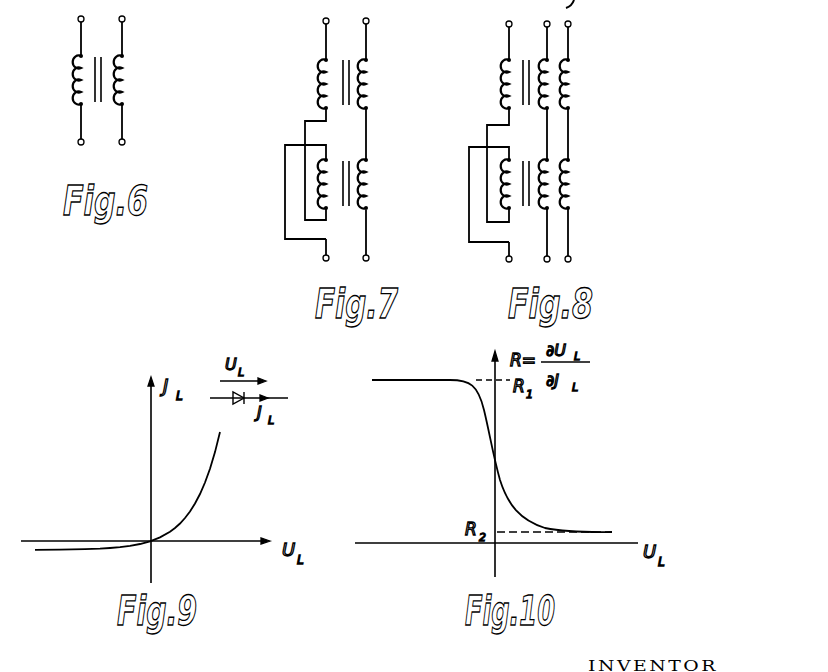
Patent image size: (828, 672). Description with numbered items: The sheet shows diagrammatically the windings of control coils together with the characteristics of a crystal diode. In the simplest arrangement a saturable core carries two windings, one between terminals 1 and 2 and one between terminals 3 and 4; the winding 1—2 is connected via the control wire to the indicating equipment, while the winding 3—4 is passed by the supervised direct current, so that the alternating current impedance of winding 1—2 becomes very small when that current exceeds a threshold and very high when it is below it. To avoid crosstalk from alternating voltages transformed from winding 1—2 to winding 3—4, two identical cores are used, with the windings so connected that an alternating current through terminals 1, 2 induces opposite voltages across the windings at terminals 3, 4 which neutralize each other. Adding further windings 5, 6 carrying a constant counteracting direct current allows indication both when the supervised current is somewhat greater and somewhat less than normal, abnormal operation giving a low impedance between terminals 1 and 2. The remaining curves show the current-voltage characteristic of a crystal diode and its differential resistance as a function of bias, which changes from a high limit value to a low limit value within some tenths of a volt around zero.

In FIG. 6, the winding terminal 1 is at (73, 34).
In FIG. 7, the winding terminal 1 is at (319, 37).
In FIG. 8, the winding terminal 1 is at (501, 38).
In FIG. 6, the winding terminal 2 is at (73, 129).
In FIG. 7, the winding terminal 2 is at (319, 254).
In FIG. 8, the winding terminal 2 is at (501, 256).
In FIG. 6, the winding terminal 3 is at (114, 34).
In FIG. 7, the winding terminal 3 is at (359, 37).
In FIG. 8, the winding terminal 3 is at (540, 38).
In FIG. 6, the winding terminal 4 is at (114, 129).
In FIG. 7, the winding terminal 4 is at (359, 240).
In FIG. 8, the winding terminal 4 is at (540, 239).
In FIG. 8, the additional winding terminal 5 is at (562, 38).
In FIG. 8, the additional winding terminal 6 is at (575, 239).